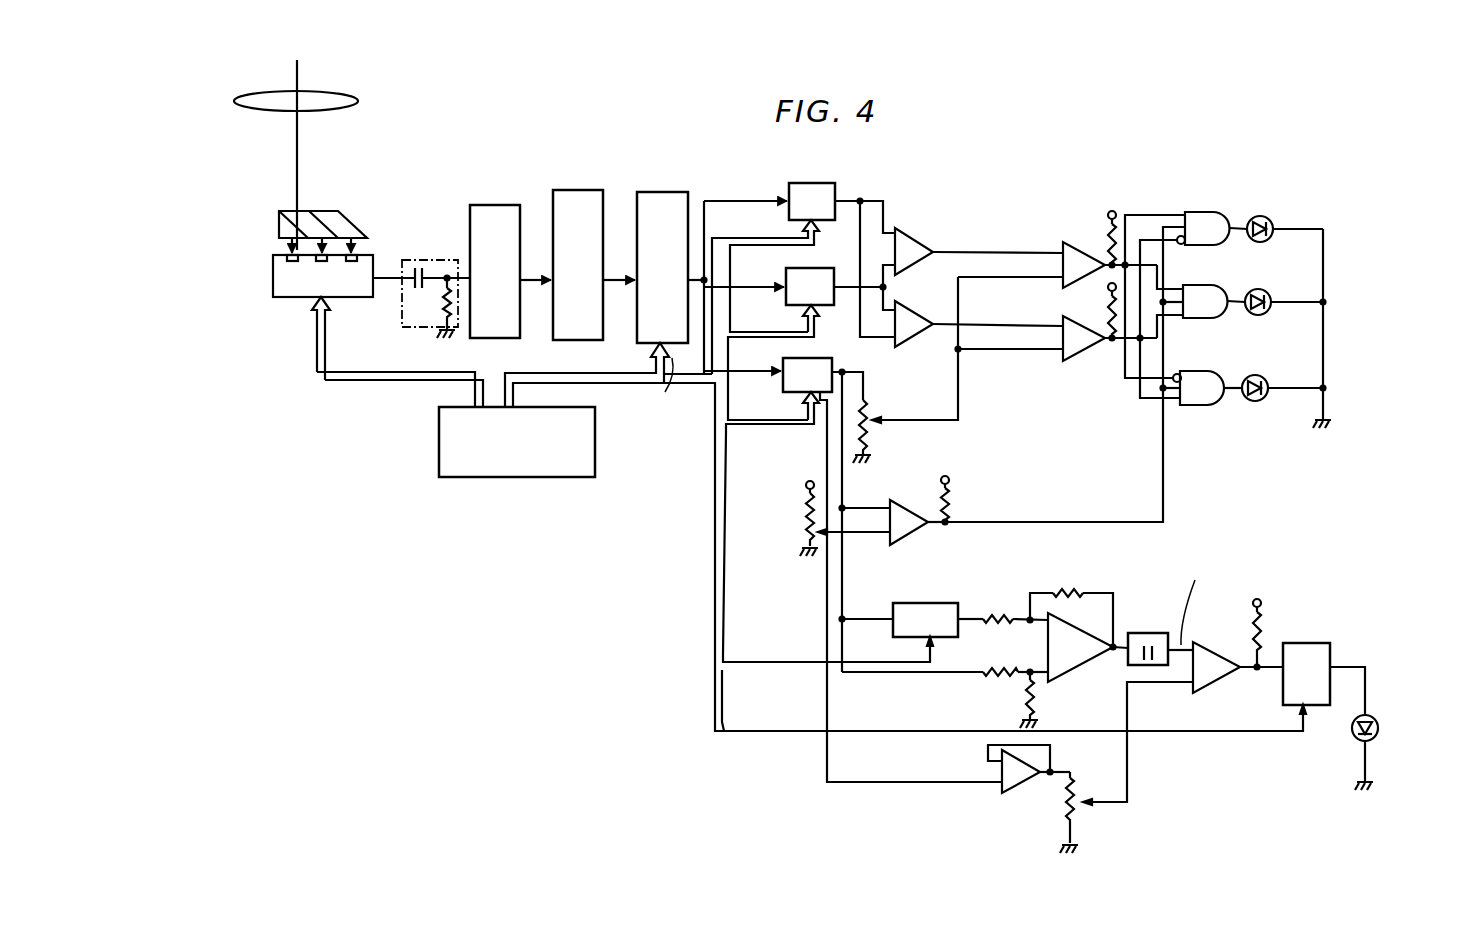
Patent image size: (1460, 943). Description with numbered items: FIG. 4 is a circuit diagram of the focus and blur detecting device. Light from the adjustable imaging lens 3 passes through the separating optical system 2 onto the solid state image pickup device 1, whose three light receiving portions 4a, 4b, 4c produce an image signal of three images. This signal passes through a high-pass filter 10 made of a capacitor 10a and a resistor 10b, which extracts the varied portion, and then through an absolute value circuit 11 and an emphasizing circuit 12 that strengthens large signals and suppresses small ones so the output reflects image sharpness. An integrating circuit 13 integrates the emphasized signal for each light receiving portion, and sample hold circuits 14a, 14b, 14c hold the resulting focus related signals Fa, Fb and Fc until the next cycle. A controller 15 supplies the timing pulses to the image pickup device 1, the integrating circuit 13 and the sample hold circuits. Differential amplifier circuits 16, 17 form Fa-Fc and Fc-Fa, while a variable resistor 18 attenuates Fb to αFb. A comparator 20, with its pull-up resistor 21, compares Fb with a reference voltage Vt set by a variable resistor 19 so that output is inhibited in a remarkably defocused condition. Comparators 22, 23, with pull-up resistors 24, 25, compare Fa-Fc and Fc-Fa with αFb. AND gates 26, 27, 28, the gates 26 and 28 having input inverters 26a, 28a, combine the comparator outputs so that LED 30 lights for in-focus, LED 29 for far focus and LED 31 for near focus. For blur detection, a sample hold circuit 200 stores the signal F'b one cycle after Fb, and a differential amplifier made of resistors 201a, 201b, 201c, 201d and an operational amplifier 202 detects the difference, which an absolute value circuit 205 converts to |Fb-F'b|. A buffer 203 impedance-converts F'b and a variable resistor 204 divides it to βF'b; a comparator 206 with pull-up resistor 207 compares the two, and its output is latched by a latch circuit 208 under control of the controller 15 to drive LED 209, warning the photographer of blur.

The solid state image pickup device 1 is at (286, 297).
The separating optical system 2 is at (330, 211).
The imaging lens 3 is at (352, 92).
The light receiving portion 4a is at (292, 274).
The light receiving portion 4b is at (322, 274).
The light receiving portion 4c is at (352, 274).
The high-pass filter 10 is at (405, 297).
The capacitor 10a is at (420, 268).
The resistor 10b is at (440, 300).
The absolute value circuit 11 is at (492, 205).
The emphasizing circuit 12 is at (572, 190).
The integrating circuit 13 is at (660, 192).
The sample hold circuit 14a is at (808, 183).
The sample hold circuit 14b is at (806, 358).
The sample hold circuit 14c is at (808, 268).
The controller 15 is at (513, 477).
The differential amplifier circuit 16 is at (912, 228).
The differential amplifier circuit 17 is at (910, 301).
The variable resistor 18 is at (870, 430).
The variable resistor 19 is at (801, 527).
The comparator 20 is at (915, 535).
The pull-up resistor 21 is at (953, 498).
The comparator 22 is at (1082, 242).
The comparator 23 is at (1075, 358).
The pull-up resistor 24 is at (1118, 247).
The pull-up resistor 25 is at (1118, 334).
The AND gate 26 is at (1193, 212).
The input inverter 26a is at (1182, 245).
The AND gate 27 is at (1222, 288).
The AND gate 28 is at (1213, 371).
The input inverter 28a is at (1177, 374).
The LED 29 is at (1266, 217).
The LED 30 is at (1267, 291).
The LED 31 is at (1263, 376).
The sample hold circuit 200 is at (903, 603).
The resistor 201a is at (1071, 585).
The resistor 201b is at (1000, 610).
The resistor 201c is at (990, 680).
The resistor 201d is at (1040, 697).
The operational amplifier 202 is at (1088, 632).
The buffer 203 is at (1020, 790).
The variable resistor 204 is at (1075, 793).
The absolute value circuit 205 is at (1148, 633).
The comparator 206 is at (1216, 643).
The pull-up resistor 207 is at (1263, 631).
The latch circuit 208 is at (1330, 645).
The LED 209 is at (1378, 722).